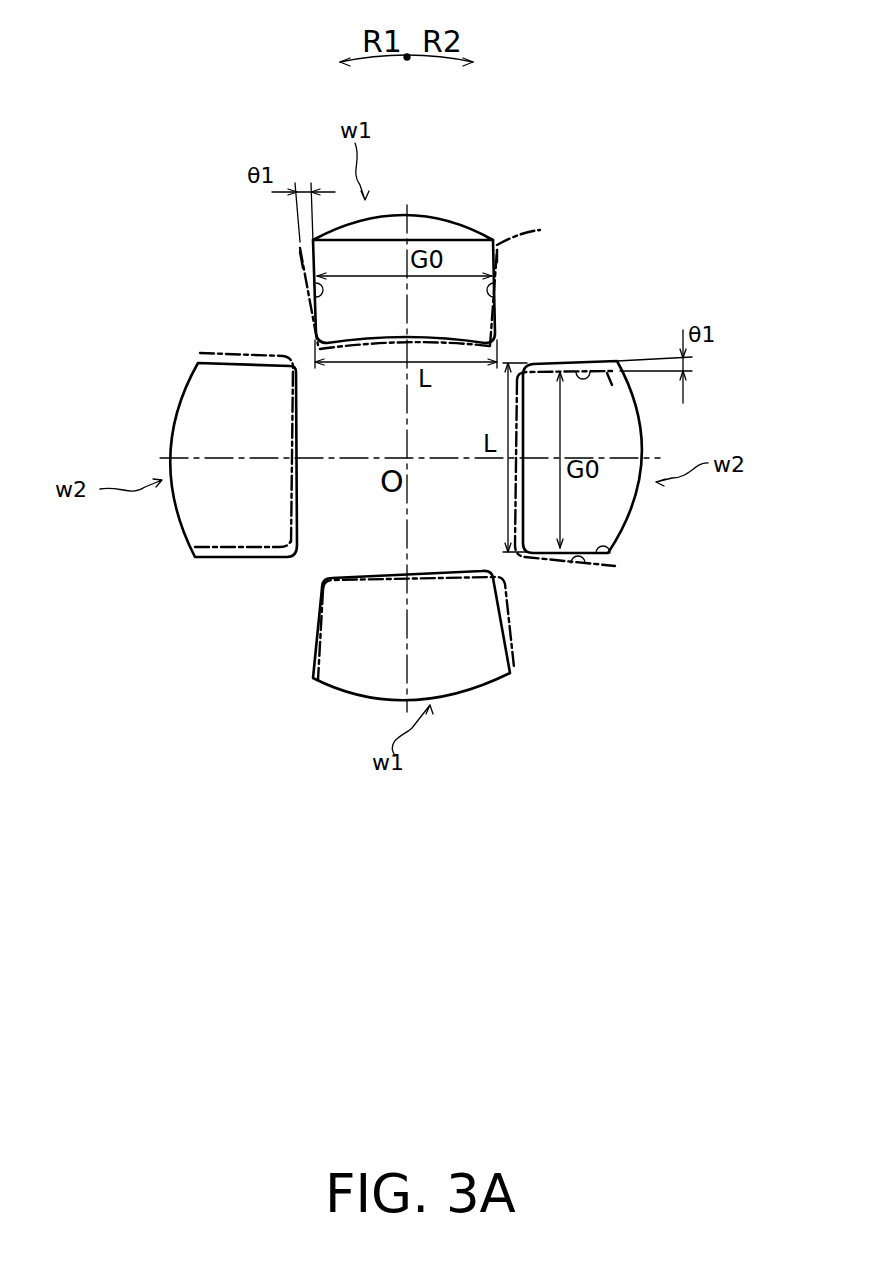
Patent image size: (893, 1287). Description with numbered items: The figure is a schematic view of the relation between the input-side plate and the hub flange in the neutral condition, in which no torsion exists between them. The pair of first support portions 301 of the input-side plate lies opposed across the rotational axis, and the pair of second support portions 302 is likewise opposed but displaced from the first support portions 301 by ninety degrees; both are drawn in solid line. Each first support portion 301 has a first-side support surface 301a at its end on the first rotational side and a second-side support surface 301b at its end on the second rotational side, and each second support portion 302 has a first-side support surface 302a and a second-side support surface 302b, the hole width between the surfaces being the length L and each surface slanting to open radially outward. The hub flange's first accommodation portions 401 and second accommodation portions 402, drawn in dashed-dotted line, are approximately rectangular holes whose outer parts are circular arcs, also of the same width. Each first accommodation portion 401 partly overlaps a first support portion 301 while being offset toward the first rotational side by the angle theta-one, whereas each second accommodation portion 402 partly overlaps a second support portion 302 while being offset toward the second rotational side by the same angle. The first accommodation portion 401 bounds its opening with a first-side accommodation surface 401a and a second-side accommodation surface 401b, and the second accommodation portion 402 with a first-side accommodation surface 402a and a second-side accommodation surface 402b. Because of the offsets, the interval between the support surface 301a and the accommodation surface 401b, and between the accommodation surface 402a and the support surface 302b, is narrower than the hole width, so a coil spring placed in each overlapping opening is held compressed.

The first support portion 301 is at (417, 216).
The R1 support surface 301a is at (312, 290).
The R2 support surface 301b is at (500, 290).
The second support portion 302 is at (190, 407).
The R1 support surface 302a is at (585, 370).
The R2 support surface 302b is at (605, 553).
The first accommodation portion 401 is at (464, 228).
The R1 accommodation surface 401a is at (302, 252).
The R2 accommodation surface 401b is at (508, 230).
The second accommodation portion 402 is at (186, 502).
The R1 accommodation surface 402a is at (607, 373).
The R2 accommodation surface 402b is at (583, 570).